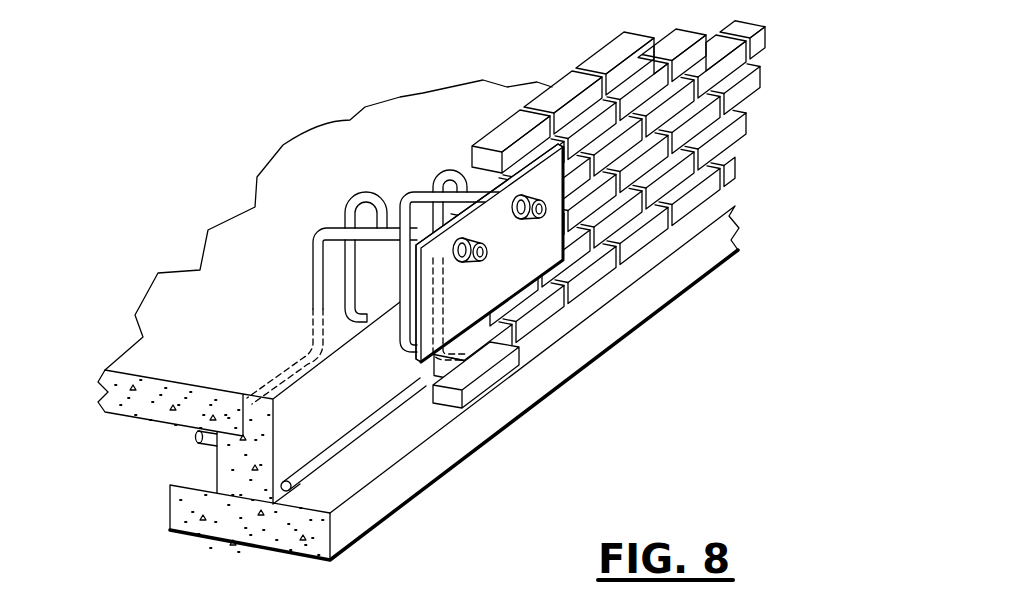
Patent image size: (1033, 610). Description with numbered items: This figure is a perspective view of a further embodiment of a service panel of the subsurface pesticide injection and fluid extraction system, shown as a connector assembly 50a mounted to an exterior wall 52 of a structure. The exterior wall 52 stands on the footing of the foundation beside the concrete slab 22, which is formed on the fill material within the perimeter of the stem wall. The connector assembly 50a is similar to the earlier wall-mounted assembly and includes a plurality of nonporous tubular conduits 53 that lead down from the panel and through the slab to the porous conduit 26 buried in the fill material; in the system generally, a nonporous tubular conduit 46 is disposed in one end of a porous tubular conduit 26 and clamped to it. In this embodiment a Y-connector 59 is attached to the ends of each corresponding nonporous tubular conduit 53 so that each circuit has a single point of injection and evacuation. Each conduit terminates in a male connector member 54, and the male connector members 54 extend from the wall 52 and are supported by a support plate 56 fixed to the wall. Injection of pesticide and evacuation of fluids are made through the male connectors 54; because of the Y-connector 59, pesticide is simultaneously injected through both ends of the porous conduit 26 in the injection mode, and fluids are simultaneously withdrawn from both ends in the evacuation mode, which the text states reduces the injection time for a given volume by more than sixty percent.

The concrete slab 22 is at (177, 317).
The porous conduit 26 is at (313, 475).
The nonporous tubular conduit 46 is at (412, 212).
The connector assembly 50a is at (451, 152).
The exterior wall 52 is at (693, 168).
The nonporous tubular conduit 53 is at (321, 228).
The male connector member 54 is at (555, 212).
The support plate 56 is at (495, 256).
The Y-connector 59 is at (348, 263).